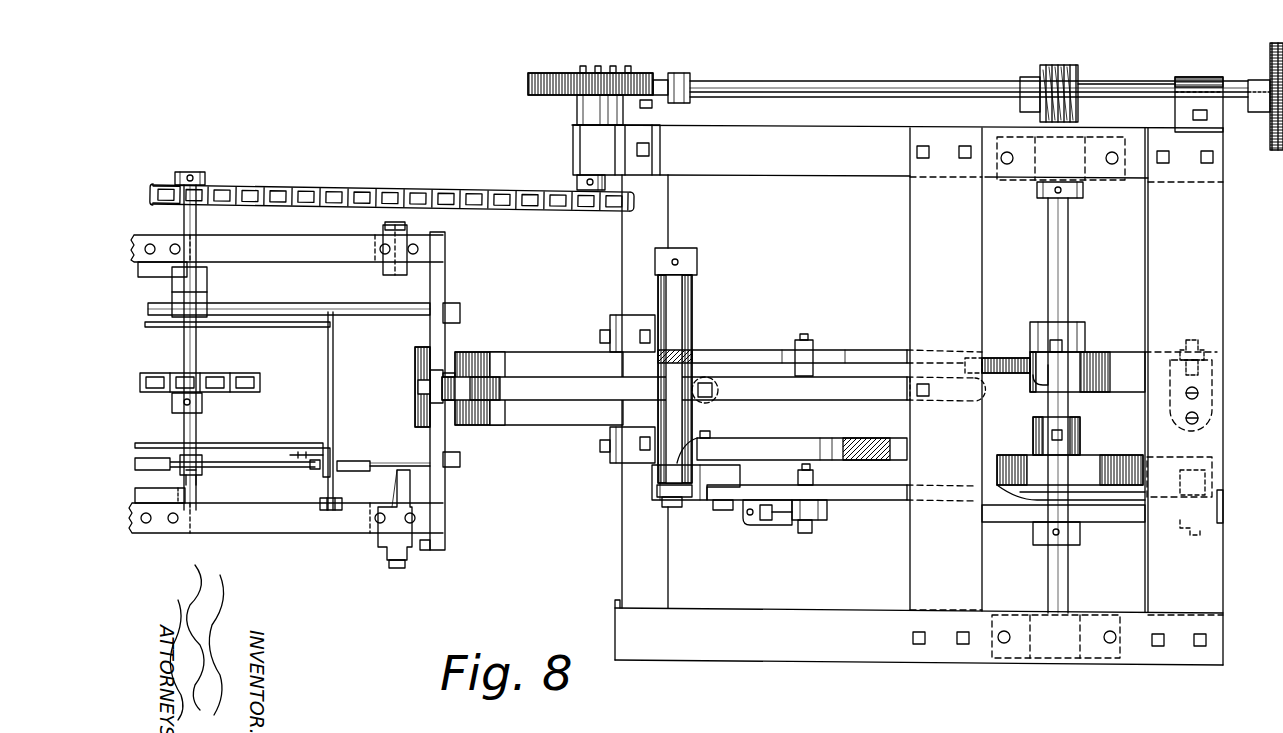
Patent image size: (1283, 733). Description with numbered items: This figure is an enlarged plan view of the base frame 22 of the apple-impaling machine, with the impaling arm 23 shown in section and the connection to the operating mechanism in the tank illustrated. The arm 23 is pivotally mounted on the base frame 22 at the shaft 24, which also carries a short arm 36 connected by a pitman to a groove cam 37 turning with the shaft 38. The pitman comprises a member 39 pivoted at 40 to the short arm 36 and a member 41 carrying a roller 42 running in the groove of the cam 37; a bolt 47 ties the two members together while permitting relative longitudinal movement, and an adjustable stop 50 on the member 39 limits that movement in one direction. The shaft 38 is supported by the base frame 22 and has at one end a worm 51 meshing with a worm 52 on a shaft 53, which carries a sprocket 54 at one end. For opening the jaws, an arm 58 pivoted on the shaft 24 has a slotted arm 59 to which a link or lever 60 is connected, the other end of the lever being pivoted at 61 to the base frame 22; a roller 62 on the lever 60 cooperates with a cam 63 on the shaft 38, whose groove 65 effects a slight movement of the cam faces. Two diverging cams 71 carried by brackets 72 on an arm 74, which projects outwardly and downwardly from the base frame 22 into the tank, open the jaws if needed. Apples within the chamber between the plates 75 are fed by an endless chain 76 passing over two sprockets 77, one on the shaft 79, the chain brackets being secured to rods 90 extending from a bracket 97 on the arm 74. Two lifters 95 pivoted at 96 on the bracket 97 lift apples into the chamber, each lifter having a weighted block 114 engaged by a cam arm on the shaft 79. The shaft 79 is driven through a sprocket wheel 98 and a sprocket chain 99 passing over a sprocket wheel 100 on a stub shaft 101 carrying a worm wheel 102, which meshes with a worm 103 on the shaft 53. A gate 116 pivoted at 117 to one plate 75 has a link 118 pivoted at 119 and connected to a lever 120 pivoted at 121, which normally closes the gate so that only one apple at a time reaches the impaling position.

The base frame 22 is at (1212, 260).
The arm 23 is at (782, 445).
The shaft 24 is at (658, 507).
The short arm 36 is at (705, 487).
The groove cam 37 is at (1100, 462).
The shaft 38 is at (1068, 270).
The pitman member 39 is at (860, 500).
The pivot 40 is at (720, 512).
The pitman member 41 is at (1006, 518).
The roller 42 is at (1180, 500).
The bolt 47 is at (803, 533).
The adjustable stop 50 is at (778, 522).
The worm 51 is at (1080, 84).
The worm 52 is at (1058, 66).
The shaft 53 is at (912, 80).
The sprocket 54 is at (1272, 142).
The arm 58 is at (680, 345).
The slotted arm 59 is at (745, 355).
The link or lever 60 is at (873, 350).
The pivot 61 is at (1205, 345).
The roller 62 is at (1063, 365).
The cam 63 is at (1012, 370).
The groove 65 is at (1122, 382).
The cams 71 is at (415, 353).
The brackets 72 is at (440, 370).
The arm 74 is at (533, 392).
The plates 75 is at (258, 443).
The endless chain 76 is at (150, 372).
The sprockets 77 is at (228, 392).
The shaft 79 is at (198, 226).
The rods 90 is at (403, 308).
The lifters 95 is at (318, 242).
The pivot 96 is at (396, 275).
The bracket 97 is at (440, 340).
The sprocket wheel 98 is at (200, 190).
The sprocket chain 99 is at (305, 186).
The sprocket wheel 100 is at (598, 200).
The stub shaft 101 is at (575, 119).
The worm wheel 102 is at (537, 90).
The worm 103 is at (585, 53).
The weighted block 114 is at (165, 507).
The gate 116 is at (328, 389).
The pivot 117 is at (345, 470).
The link 118 is at (322, 485).
The pivot 119 is at (338, 510).
The lever 120 is at (268, 467).
The pivot 121 is at (205, 474).